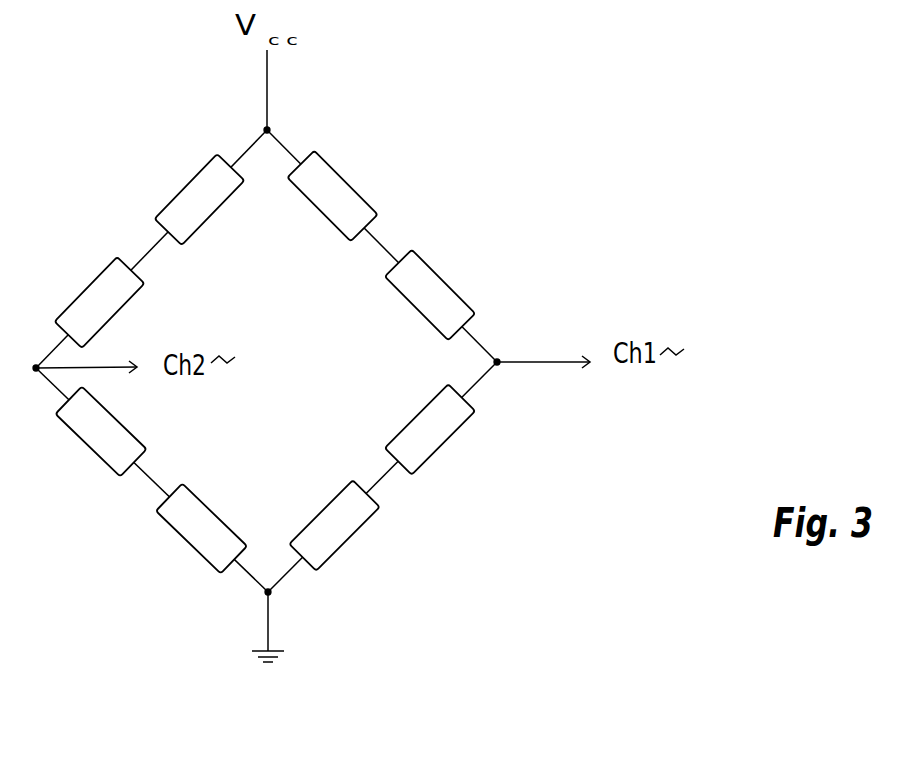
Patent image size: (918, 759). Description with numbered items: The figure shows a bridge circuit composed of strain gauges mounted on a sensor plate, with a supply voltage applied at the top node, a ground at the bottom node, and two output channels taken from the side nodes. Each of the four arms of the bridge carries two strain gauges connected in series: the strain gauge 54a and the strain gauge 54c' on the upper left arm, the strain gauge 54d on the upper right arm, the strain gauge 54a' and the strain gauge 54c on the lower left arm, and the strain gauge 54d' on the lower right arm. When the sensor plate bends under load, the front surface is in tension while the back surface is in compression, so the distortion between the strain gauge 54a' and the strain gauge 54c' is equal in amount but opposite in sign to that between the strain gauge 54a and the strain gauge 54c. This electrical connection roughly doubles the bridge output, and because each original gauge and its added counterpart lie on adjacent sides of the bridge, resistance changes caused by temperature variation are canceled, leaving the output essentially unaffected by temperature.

The strain gauge 54a is at (185, 195).
The strain gauge 54c' is at (81, 301).
The strain gauge 54d is at (355, 196).
The strain gauge 54a' is at (82, 437).
The strain gauge 54c is at (183, 531).
The strain gauge 54d' is at (457, 439).